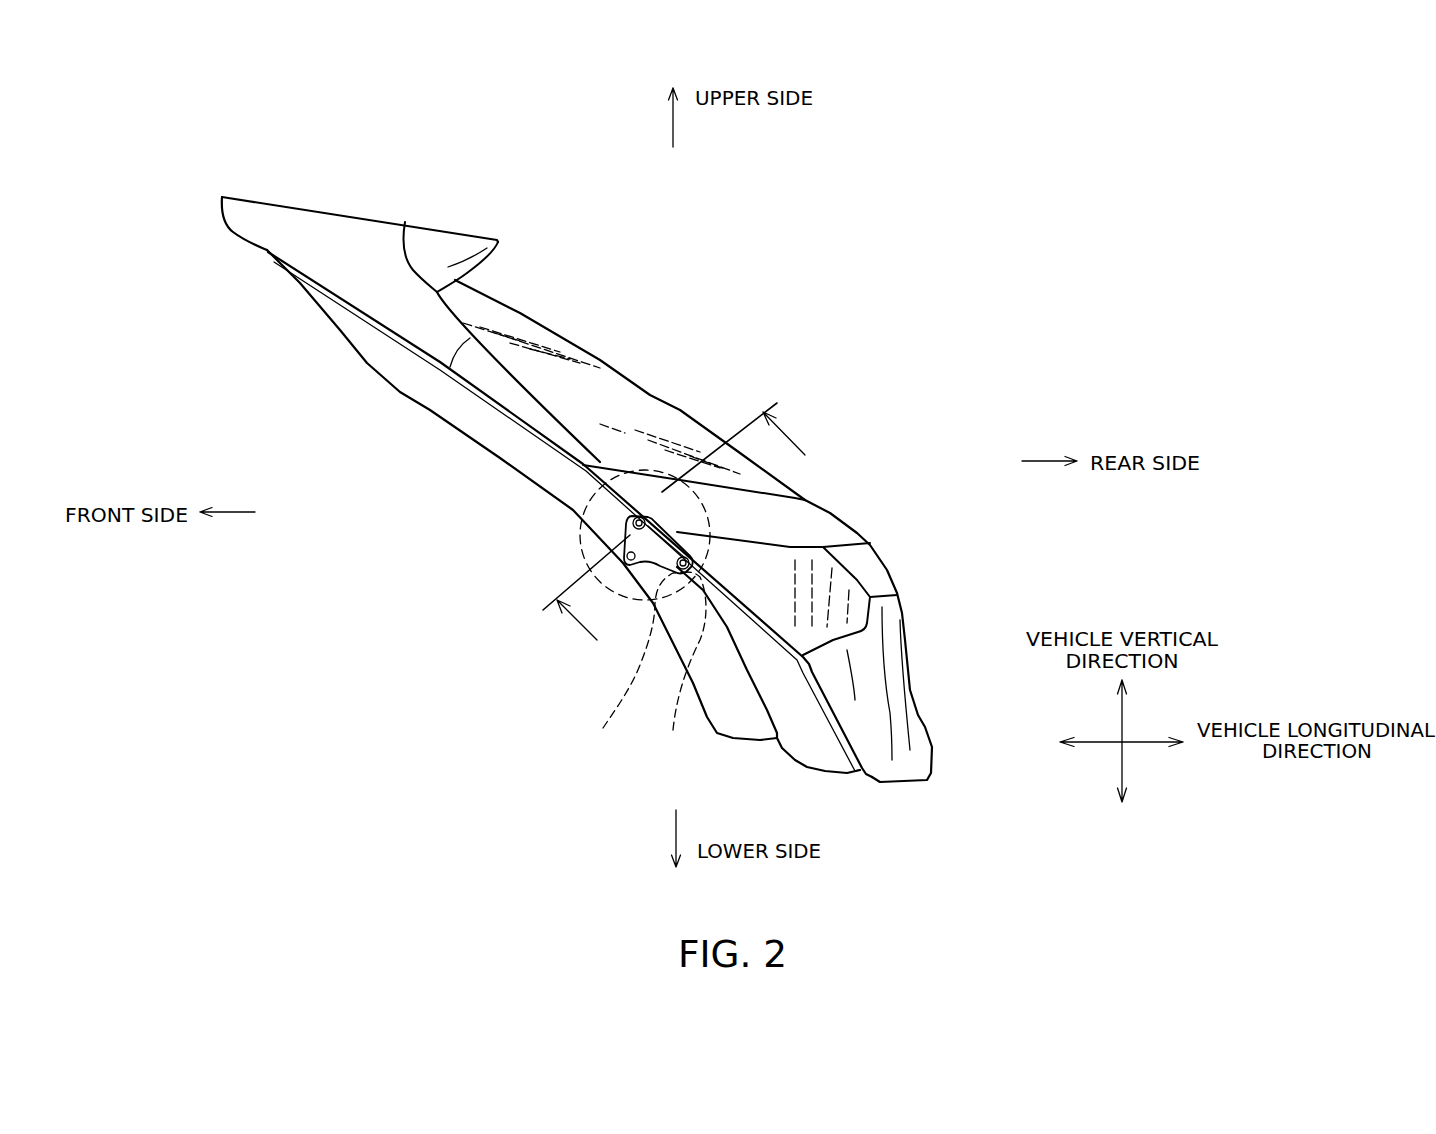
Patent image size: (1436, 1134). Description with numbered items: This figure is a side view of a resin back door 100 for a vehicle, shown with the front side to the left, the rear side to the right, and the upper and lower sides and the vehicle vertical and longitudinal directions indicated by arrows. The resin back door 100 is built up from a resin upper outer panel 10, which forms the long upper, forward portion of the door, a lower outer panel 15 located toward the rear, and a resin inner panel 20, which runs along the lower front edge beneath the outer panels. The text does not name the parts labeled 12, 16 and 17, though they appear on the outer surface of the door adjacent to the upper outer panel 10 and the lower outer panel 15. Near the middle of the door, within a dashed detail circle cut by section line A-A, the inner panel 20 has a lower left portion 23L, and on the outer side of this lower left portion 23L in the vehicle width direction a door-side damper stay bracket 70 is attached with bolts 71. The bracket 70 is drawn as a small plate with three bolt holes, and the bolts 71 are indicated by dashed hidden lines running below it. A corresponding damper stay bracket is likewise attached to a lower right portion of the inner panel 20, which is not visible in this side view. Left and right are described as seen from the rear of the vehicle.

The resin back door 100 is at (710, 233).
The resin upper outer panel 10 is at (305, 222).
The pillar outer panel 12 is at (650, 402).
The lower outer panel 15 is at (827, 523).
The ridge line 16 is at (487, 382).
The bulge portion 17 is at (477, 230).
The resin inner panel 20 is at (368, 363).
The door-side damper stay bracket 70 is at (660, 567).
The bolts 71 is at (636, 665).
The lower left portion 23L is at (680, 669).